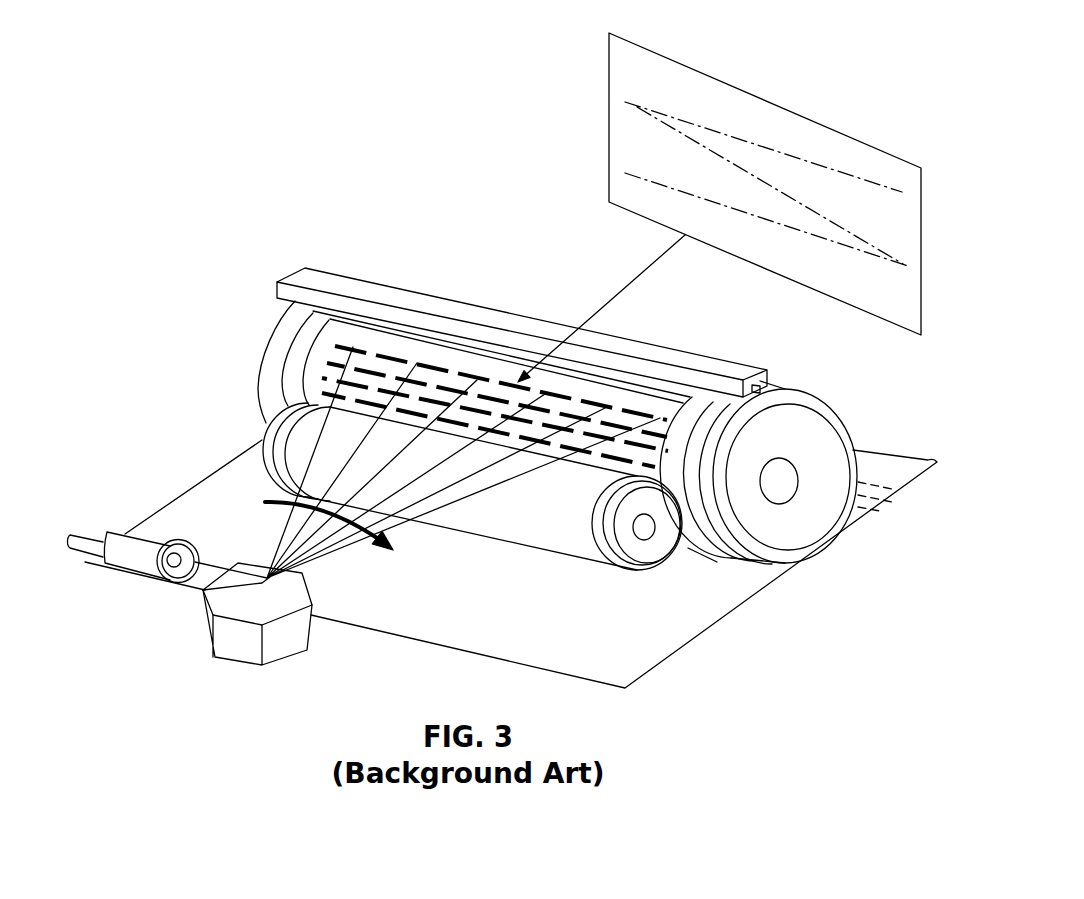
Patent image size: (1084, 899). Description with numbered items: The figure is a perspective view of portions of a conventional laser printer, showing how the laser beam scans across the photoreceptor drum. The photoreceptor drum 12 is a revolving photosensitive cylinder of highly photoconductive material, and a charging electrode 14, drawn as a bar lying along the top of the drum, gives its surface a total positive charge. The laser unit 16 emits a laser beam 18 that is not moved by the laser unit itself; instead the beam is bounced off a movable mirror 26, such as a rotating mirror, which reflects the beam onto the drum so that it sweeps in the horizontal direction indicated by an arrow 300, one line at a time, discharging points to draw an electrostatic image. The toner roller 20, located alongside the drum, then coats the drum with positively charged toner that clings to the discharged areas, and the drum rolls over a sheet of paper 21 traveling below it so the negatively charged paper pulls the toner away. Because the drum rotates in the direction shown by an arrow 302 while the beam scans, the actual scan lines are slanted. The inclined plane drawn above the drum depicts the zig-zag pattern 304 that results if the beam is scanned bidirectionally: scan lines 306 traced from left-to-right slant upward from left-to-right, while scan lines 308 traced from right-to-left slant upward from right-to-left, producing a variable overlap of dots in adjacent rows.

The photoreceptor drum 12 is at (268, 333).
The charging electrode 14 is at (449, 286).
The laser unit 16 is at (120, 535).
The laser beam 18 is at (210, 568).
The toner roller 20 is at (263, 435).
The sheet of paper 21 is at (888, 471).
The movable mirror 26 is at (235, 662).
The arrow 300 is at (375, 548).
The arrow 302 is at (700, 448).
The zig-zag pattern 304 is at (688, 65).
The scan lines 306 is at (657, 115).
The scan lines 308 is at (848, 233).